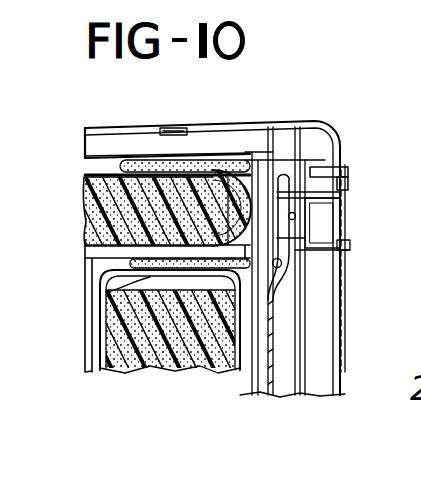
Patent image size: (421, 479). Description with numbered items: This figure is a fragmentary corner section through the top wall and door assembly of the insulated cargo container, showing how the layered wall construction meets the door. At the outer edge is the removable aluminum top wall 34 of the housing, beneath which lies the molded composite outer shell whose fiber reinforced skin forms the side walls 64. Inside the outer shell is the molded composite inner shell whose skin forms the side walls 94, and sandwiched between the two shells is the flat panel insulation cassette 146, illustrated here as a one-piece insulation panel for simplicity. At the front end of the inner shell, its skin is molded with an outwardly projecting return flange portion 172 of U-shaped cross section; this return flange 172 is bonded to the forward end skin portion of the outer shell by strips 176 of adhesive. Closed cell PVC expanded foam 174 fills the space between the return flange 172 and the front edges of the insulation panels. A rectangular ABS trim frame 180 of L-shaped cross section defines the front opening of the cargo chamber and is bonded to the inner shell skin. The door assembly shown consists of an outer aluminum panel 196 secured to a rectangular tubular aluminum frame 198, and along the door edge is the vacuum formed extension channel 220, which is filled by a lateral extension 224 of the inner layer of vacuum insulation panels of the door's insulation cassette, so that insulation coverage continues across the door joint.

The top wall 34 is at (105, 127).
The side walls of outer shell 64 is at (142, 138).
The strips of adhesive 176 is at (179, 168).
The insulation cassette 146 is at (85, 193).
The side walls of inner shell 94 is at (84, 260).
The return flange portion 172 is at (241, 162).
The closed cell PVC expanded foam 174 is at (258, 190).
The outer aluminum panel 196 is at (333, 347).
The tubular aluminum frame 198 is at (343, 207).
The trim frame 180 is at (115, 294).
The extension channel 220 is at (101, 334).
The lateral extension 224 is at (162, 350).